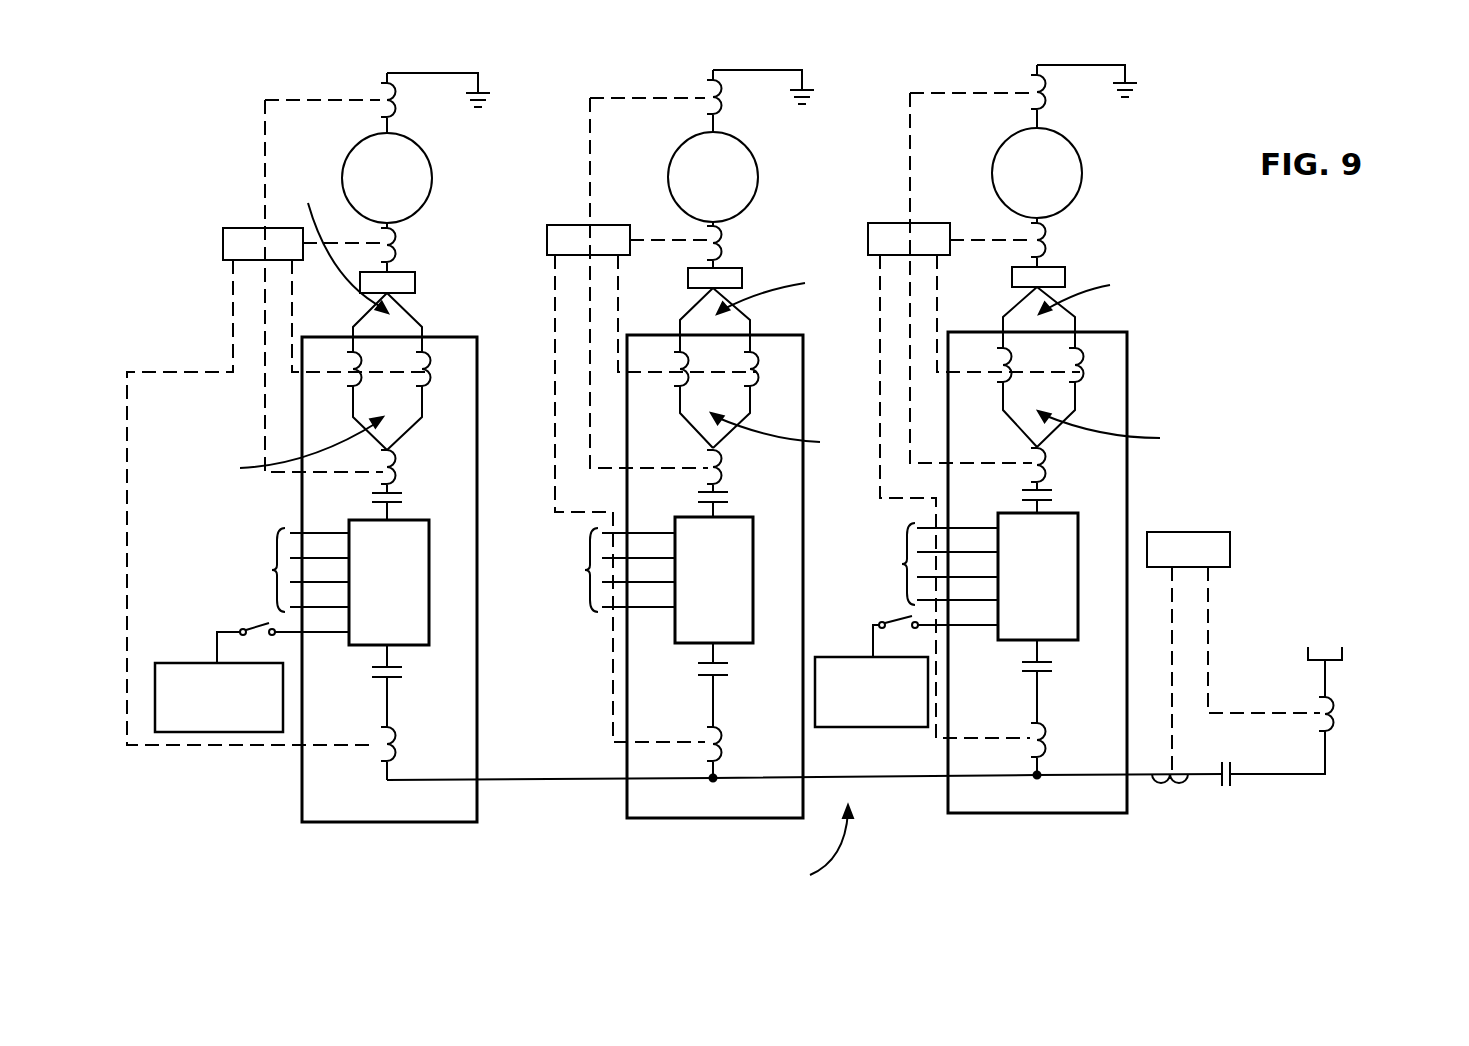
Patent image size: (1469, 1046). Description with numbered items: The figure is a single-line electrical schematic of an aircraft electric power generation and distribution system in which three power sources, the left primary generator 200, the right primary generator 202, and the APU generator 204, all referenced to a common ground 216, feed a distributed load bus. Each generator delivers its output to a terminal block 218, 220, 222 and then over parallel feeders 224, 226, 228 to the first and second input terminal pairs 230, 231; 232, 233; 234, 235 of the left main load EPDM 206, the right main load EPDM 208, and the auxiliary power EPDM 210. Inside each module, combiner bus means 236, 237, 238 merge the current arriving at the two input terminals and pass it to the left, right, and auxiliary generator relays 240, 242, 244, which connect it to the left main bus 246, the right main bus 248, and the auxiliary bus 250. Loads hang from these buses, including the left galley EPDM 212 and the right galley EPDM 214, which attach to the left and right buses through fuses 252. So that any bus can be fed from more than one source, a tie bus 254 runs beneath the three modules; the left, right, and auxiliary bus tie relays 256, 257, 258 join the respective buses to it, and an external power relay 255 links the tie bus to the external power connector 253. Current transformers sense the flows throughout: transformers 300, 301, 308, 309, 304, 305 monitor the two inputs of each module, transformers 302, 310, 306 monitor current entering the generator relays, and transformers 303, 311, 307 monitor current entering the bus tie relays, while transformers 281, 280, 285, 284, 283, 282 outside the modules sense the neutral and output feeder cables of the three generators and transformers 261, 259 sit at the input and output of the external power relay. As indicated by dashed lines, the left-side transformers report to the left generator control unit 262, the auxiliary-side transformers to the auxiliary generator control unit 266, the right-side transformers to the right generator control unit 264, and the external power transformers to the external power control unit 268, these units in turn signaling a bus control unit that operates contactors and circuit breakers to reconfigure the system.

The left primary generator 200 is at (352, 155).
The right primary generator 202 is at (1002, 160).
The APU generator 204 is at (672, 170).
The left main load EPDM 206 is at (465, 386).
The right main load EPDM 208 is at (1118, 358).
The auxiliary power EPDM 210 is at (795, 343).
The left galley load EPDM 212 is at (170, 722).
The right galley load EPDM 214 is at (838, 715).
The common ground 216 is at (483, 90).
The terminal block 218 is at (416, 283).
The terminal block 220 is at (1066, 277).
The terminal block 222 is at (743, 278).
The parallel feeders 224 is at (332, 244).
The parallel feeders 226 is at (1098, 291).
The parallel feeders 228 is at (784, 290).
The first input terminal 230 is at (352, 330).
The second input terminal 231 is at (424, 330).
The first input terminal 232 is at (1002, 322).
The second input terminal 233 is at (1077, 322).
The first input terminal 234 is at (680, 325).
The second input terminal 235 is at (752, 326).
The combiner bus means 236 is at (290, 450).
The combiner bus means 237 is at (1123, 429).
The combiner bus means 238 is at (787, 432).
The left generator relay 240 is at (405, 494).
The right generator relay 242 is at (1025, 492).
The auxiliary generator relay 244 is at (700, 500).
The left main bus 246 is at (430, 622).
The right main bus 248 is at (1065, 538).
The auxiliary bus 250 is at (676, 640).
The fuses 252 is at (240, 630).
The external power connector 253 is at (1308, 652).
The tie bus 254 is at (804, 837).
The external power relay 255 is at (1215, 785).
The left bus tie relay 256 is at (376, 680).
The right bus tie relay 257 is at (1024, 676).
The auxiliary bus tie relay 258 is at (722, 676).
The current transformer 259 is at (1165, 788).
The current transformer 261 is at (1332, 726).
The left generator control unit 262 is at (235, 228).
The right generator control unit 264 is at (870, 223).
The auxiliary generator control unit 266 is at (560, 225).
The external power control unit 268 is at (1215, 532).
The current transformer 280 is at (396, 245).
The current transformer 281 is at (396, 103).
The current transformer 282 is at (722, 238).
The current transformer 283 is at (722, 103).
The current transformer 284 is at (1045, 233).
The current transformer 285 is at (1045, 103).
The current transformer 300 is at (349, 388).
The current transformer 301 is at (433, 362).
The current transformer 302 is at (396, 455).
The current transformer 303 is at (398, 742).
The current transformer 304 is at (681, 386).
The current transformer 305 is at (757, 383).
The current transformer 306 is at (722, 456).
The current transformer 307 is at (721, 744).
The current transformer 308 is at (1003, 386).
The current transformer 309 is at (1082, 383).
The current transformer 310 is at (1046, 454).
The current transformer 311 is at (1045, 748).